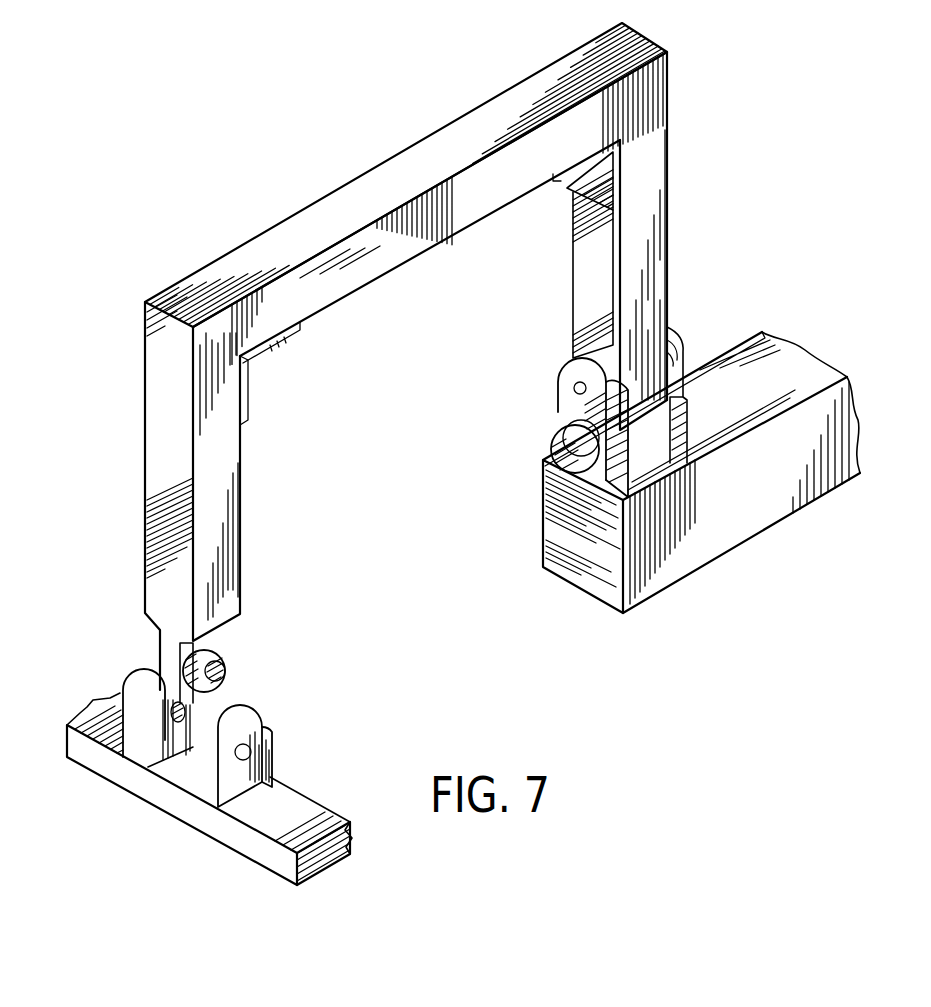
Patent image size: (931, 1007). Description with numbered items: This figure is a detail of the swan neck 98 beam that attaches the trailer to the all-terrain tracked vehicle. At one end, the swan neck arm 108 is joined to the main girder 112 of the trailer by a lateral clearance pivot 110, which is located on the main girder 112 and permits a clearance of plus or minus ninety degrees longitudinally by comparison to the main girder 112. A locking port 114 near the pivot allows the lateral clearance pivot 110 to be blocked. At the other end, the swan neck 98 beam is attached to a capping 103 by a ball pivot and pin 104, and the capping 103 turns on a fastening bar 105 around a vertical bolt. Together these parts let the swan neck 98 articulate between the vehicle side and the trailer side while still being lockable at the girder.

The swan neck beam 98 is at (307, 223).
The swan neck arm 108 is at (652, 177).
The lateral clearance pivot 110 is at (693, 335).
The main girder 112 is at (722, 510).
The locking port 114 is at (577, 388).
The capping 103 is at (263, 757).
The pivot and pin 104 is at (228, 657).
The fastening bar 105 is at (203, 812).